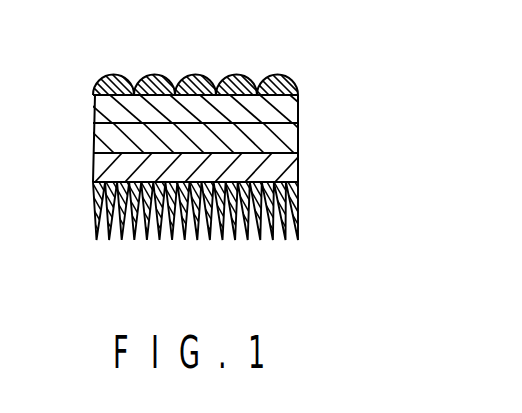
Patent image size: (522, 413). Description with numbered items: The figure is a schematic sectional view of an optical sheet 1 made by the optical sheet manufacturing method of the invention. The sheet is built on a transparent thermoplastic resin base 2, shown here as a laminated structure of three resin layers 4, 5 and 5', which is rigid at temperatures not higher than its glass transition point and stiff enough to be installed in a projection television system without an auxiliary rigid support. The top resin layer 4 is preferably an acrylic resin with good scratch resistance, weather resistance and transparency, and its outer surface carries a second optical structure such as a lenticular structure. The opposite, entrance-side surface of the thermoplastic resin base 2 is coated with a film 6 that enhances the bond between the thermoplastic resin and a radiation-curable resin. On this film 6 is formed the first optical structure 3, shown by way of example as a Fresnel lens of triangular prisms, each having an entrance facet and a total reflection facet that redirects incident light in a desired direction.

The optical sheet 1 is at (277, 55).
The thermoplastic resin base 2 is at (342, 50).
The first optical structure 3 is at (249, 229).
The resin layer 4 is at (295, 81).
The resin layer 5 is at (199, 109).
The resin layer 5' is at (202, 140).
The film 6 is at (292, 168).